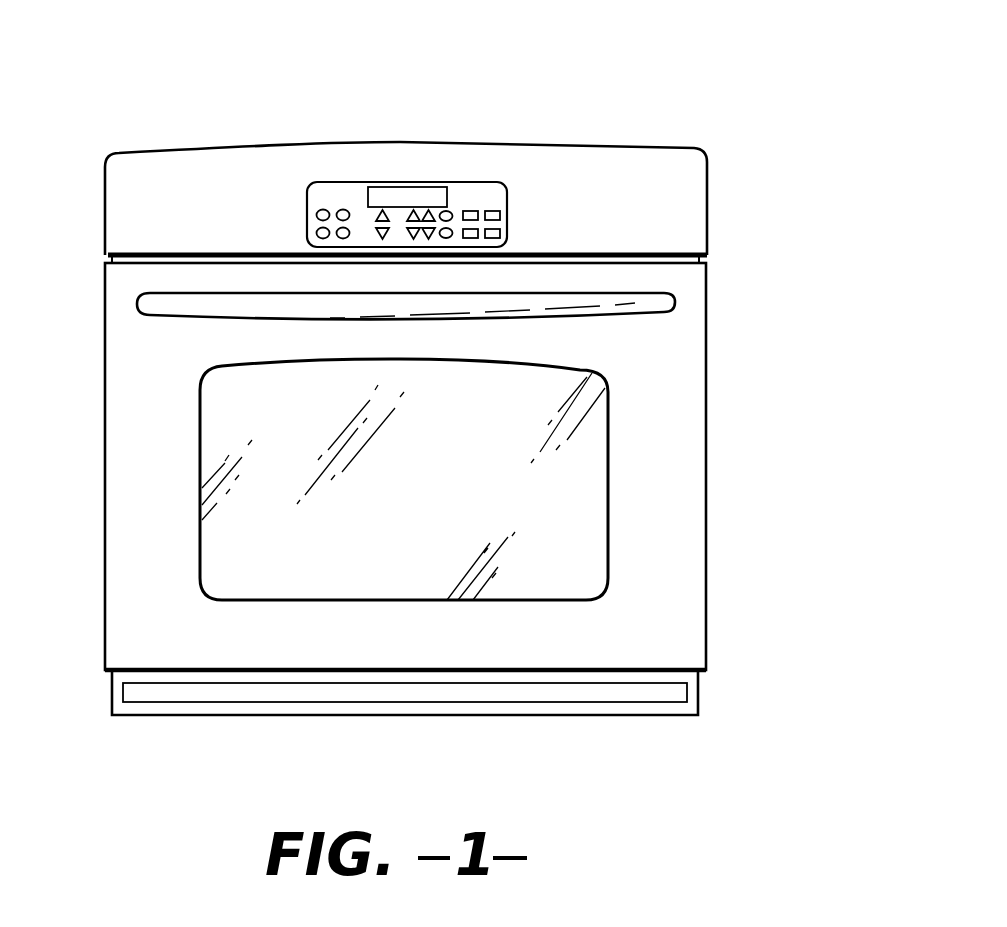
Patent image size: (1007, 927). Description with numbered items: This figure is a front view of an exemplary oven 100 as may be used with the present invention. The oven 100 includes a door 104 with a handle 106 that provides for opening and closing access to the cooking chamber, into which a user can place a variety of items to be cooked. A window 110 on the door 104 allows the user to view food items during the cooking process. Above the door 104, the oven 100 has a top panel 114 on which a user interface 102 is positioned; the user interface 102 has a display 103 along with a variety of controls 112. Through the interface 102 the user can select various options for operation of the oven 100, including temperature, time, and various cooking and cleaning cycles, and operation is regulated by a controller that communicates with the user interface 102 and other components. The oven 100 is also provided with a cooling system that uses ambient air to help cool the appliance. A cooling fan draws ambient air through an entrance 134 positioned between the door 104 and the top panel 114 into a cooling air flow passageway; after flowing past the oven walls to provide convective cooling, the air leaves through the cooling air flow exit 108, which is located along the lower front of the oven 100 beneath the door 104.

The oven 100 is at (173, 91).
The user interface 102 is at (482, 197).
The display 103 is at (407, 197).
The door 104 is at (665, 410).
The handle 106 is at (653, 302).
The cooling air flow exit 108 is at (623, 692).
The window 110 is at (590, 498).
The controls 112 is at (320, 214).
The top panel 114 is at (633, 175).
The entrance 134 is at (94, 258).